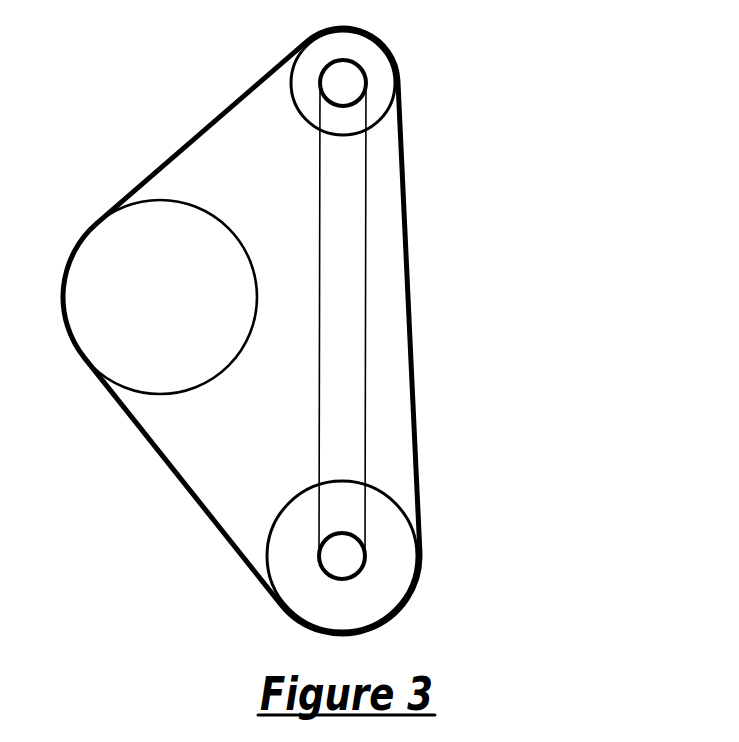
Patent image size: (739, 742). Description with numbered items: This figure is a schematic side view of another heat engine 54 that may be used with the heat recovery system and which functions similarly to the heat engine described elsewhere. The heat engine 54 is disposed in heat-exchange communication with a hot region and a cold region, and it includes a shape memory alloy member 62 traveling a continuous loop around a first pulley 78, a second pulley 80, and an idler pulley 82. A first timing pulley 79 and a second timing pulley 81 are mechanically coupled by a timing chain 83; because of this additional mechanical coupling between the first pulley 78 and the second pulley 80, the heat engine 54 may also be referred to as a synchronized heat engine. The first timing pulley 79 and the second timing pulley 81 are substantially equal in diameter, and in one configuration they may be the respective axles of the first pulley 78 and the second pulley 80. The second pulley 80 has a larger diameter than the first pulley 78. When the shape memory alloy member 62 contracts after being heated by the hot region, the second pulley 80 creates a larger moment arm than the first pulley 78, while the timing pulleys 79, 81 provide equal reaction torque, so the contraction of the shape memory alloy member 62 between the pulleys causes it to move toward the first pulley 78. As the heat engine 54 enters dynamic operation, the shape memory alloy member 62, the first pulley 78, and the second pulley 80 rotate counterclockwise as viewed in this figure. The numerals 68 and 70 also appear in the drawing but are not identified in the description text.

The heat engine 54 is at (587, 144).
The shape memory alloy member 62 is at (218, 117).
The pulley arrangement 68 is at (519, 307).
The belt span 70 is at (102, 180).
The first pulley 78 is at (358, 50).
The first timing pulley 79 is at (355, 85).
The second pulley 80 is at (370, 592).
The second timing pulley 81 is at (352, 558).
The idler pulley 82 is at (168, 306).
The timing chain 83 is at (320, 383).